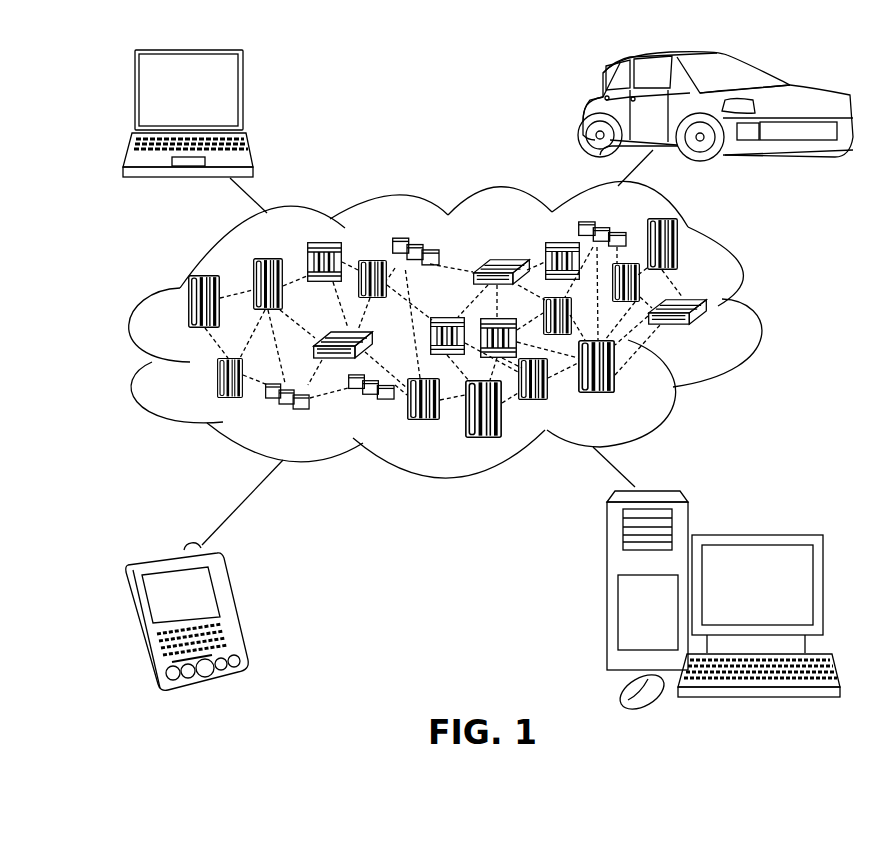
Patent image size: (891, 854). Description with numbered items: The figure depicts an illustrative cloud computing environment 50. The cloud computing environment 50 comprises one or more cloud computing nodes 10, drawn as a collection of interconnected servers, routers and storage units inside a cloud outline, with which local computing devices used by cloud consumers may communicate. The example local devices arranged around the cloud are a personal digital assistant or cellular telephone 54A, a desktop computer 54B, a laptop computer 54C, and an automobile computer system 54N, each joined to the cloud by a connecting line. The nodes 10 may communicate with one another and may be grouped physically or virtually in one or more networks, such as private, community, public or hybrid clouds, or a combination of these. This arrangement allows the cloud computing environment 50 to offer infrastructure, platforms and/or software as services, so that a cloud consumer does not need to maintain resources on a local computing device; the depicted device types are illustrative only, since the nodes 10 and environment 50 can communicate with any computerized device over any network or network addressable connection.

The cloud computing nodes 10 is at (495, 347).
The cloud computing environment 50 is at (755, 309).
The personal digital assistant or cellular telephone 54A is at (233, 607).
The desktop computer 54B is at (755, 535).
The laptop computer 54C is at (243, 96).
The automobile computer system 54N is at (583, 110).